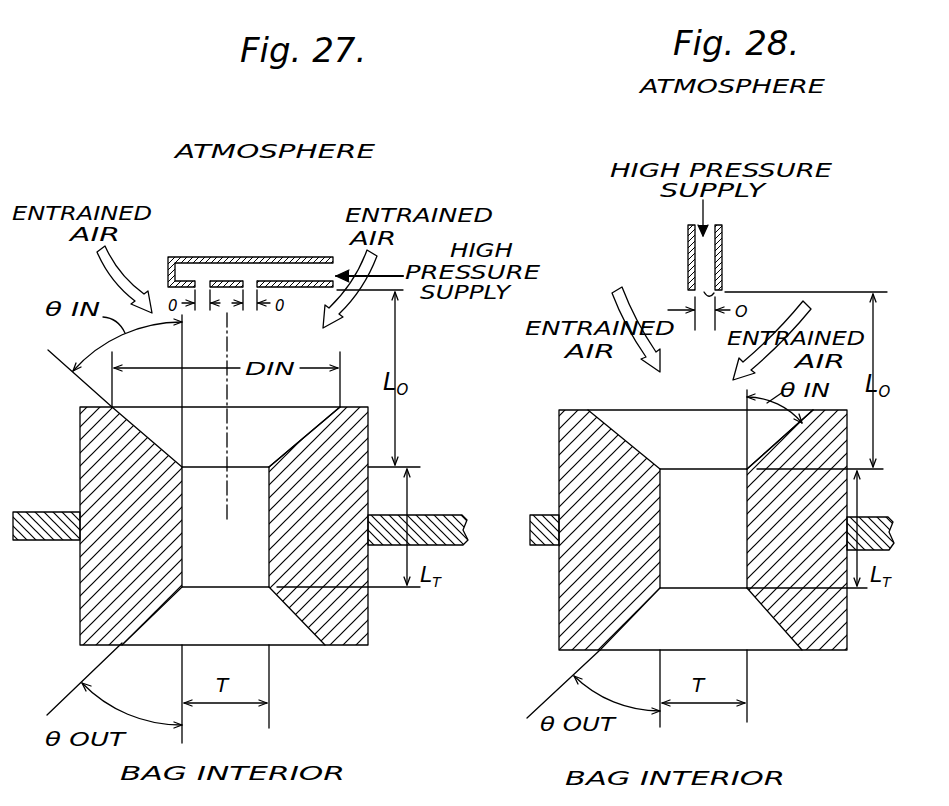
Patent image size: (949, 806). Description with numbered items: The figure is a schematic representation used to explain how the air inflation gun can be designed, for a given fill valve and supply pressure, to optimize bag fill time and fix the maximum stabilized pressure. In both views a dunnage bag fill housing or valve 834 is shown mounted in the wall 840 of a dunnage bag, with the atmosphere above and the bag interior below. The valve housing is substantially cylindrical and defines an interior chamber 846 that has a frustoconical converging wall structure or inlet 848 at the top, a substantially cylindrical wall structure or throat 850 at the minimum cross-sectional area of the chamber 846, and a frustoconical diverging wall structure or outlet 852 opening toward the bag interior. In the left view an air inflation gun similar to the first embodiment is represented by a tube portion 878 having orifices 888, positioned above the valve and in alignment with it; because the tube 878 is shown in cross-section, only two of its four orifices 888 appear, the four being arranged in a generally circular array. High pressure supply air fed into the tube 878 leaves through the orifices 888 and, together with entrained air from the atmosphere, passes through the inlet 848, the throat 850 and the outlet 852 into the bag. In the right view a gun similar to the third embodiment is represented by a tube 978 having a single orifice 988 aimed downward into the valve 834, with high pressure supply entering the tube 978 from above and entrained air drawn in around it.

In FIG. 27, the dunnage bag fill valve 834 is at (355, 630).
In FIG. 28, the dunnage bag fill valve 834 is at (572, 628).
In FIG. 27, the wall of dunnage bag 840 is at (446, 506).
In FIG. 28, the wall of dunnage bag 840 is at (545, 513).
In FIG. 27, the interior chamber 846 is at (200, 440).
In FIG. 28, the interior chamber 846 is at (661, 423).
In FIG. 27, the frustoconical converging wall structure or inlet 848 is at (310, 432).
In FIG. 28, the frustoconical converging wall structure or inlet 848 is at (768, 457).
In FIG. 27, the substantially cylindrical wall structure or throat 850 is at (268, 557).
In FIG. 28, the substantially cylindrical wall structure or throat 850 is at (742, 537).
In FIG. 27, the frustoconical diverging wall structure or outlet 852 is at (314, 638).
In FIG. 28, the frustoconical diverging wall structure or outlet 852 is at (790, 637).
In FIG. 27, the tube portion 878 is at (288, 258).
In FIG. 27, the orifices 888 is at (248, 287).
In FIG. 28, the tube 978 is at (722, 250).
In FIG. 28, the orifice 988 is at (712, 293).